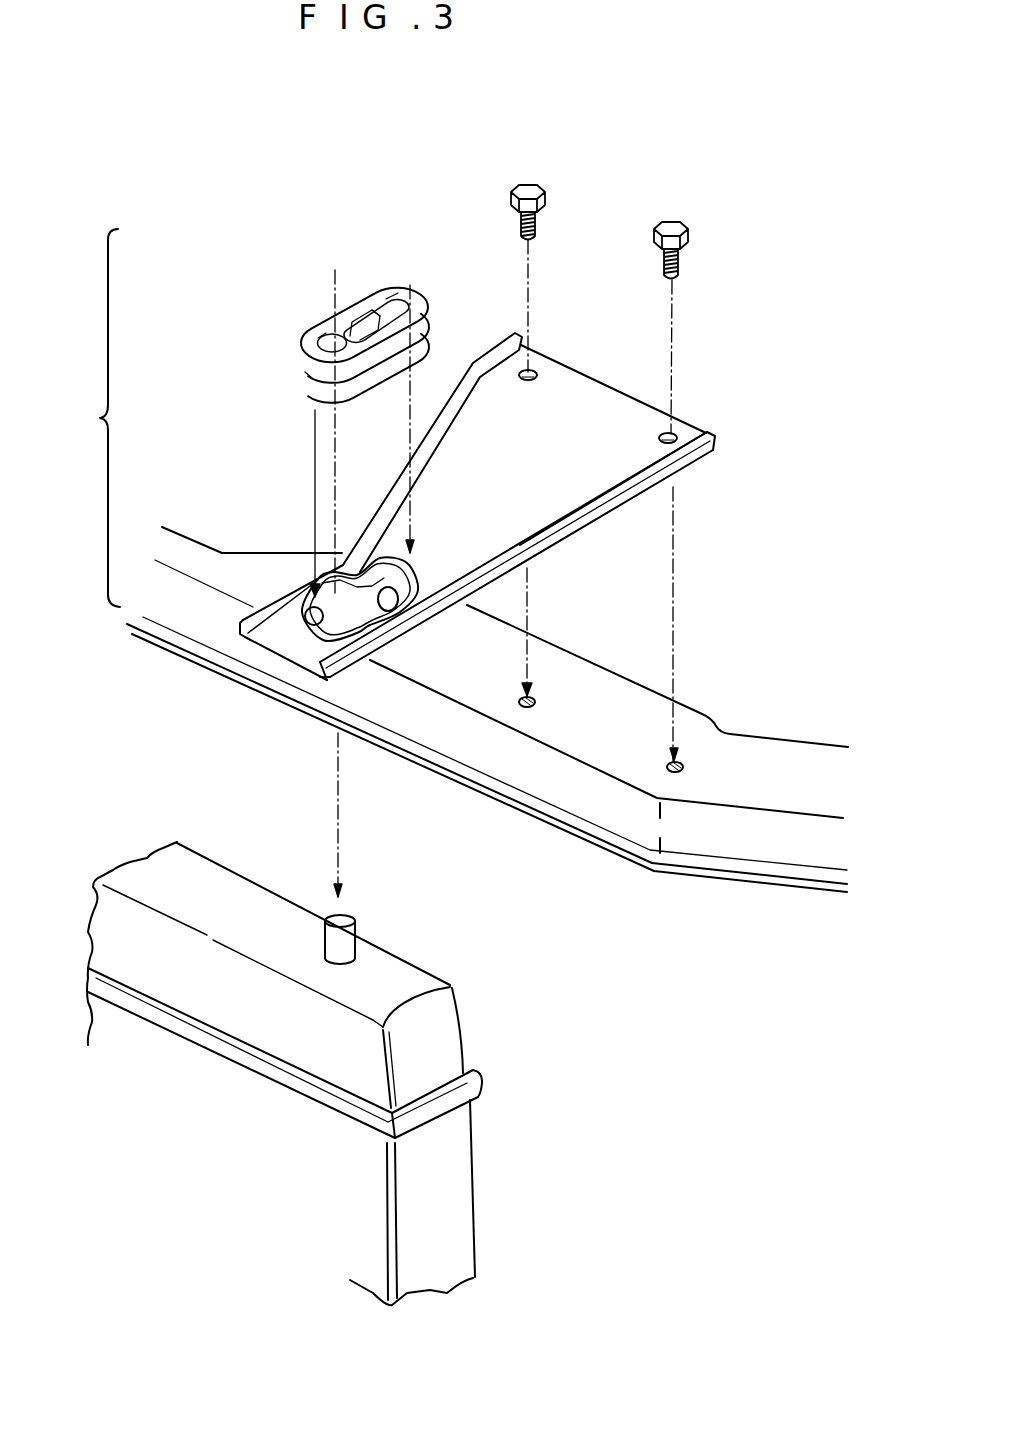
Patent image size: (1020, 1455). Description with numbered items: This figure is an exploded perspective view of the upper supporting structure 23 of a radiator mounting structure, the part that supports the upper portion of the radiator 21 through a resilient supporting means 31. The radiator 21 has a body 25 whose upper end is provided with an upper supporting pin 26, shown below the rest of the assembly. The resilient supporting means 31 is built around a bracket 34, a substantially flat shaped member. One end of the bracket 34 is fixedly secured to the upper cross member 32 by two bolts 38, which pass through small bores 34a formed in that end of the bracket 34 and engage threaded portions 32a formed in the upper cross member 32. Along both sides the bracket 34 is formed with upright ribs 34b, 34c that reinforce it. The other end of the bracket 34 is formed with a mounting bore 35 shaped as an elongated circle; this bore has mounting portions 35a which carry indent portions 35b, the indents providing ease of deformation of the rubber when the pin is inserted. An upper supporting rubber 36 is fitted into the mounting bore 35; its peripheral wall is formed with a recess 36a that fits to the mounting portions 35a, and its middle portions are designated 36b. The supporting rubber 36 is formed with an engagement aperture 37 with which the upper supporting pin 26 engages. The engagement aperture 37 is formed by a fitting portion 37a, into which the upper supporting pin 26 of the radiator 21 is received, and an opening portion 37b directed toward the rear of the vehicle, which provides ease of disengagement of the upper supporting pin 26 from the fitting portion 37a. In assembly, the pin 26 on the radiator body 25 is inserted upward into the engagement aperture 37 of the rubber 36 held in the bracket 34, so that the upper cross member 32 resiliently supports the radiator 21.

The radiator 21 is at (382, 1073).
The upper supporting structure 23 is at (210, 178).
The radiator body 25 is at (467, 1228).
The upper supporting pin 26 is at (358, 918).
The resilient supporting means 31 is at (99, 420).
The upper cross member 32 is at (507, 737).
The threaded portions 32a is at (532, 697).
The bracket 34 is at (439, 507).
The small bores 34a is at (532, 370).
The upright rib 34b is at (484, 342).
The upright rib 34c is at (692, 455).
The mounting bore 35 is at (344, 616).
The mounting portions 35a is at (405, 548).
The indent portions 35b is at (455, 603).
The upper supporting rubber 36 is at (280, 335).
The recess 36a is at (310, 382).
The middle portions 36b is at (392, 290).
The engagement aperture 37 is at (283, 335).
The fitting portion 37a is at (318, 338).
The opening portion 37b is at (330, 318).
The bolts 38 is at (530, 185).